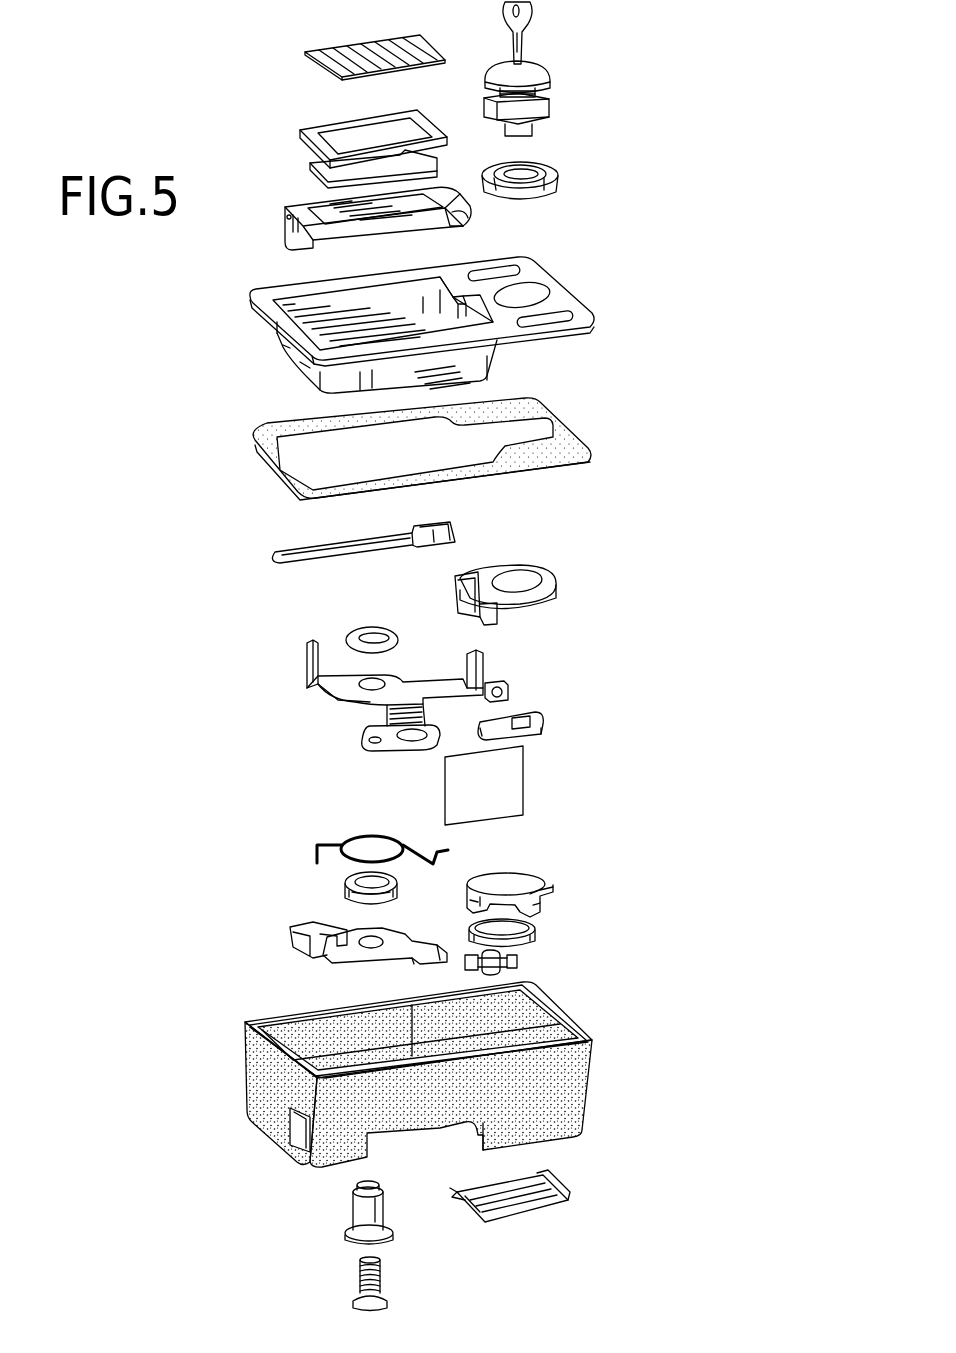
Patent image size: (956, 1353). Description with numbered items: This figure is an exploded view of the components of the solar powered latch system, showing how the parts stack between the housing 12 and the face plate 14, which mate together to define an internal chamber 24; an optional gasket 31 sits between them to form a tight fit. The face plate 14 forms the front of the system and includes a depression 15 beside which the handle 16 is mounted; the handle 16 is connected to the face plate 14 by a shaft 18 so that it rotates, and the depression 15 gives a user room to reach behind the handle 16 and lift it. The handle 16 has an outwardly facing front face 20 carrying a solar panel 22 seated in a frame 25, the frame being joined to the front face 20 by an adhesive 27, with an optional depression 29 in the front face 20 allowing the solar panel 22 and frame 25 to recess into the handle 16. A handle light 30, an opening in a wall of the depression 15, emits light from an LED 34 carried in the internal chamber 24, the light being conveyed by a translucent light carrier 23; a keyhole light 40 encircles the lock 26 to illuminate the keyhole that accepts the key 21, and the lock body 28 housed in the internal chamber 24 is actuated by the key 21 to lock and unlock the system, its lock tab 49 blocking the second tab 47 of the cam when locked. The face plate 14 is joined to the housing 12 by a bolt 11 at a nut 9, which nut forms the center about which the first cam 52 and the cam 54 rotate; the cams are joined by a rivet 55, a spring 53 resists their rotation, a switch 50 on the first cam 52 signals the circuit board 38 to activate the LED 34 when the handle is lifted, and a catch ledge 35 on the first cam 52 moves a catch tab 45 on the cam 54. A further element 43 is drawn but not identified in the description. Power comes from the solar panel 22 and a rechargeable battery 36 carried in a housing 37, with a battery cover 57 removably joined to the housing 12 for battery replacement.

The nut 9 is at (350, 1210).
The bolt 11 is at (386, 1292).
The housing 12 is at (439, 1065).
The face plate 14 is at (420, 310).
The depression 15 is at (290, 318).
The handle 16 is at (376, 221).
The shaft 18 is at (306, 550).
The front face 20 is at (458, 204).
The key 21 is at (510, 34).
The solar panel 22 is at (408, 50).
The light carrier 23 is at (478, 578).
The internal chamber 24 is at (296, 997).
The frame 25 is at (328, 125).
The lock 26 is at (560, 68).
The adhesive 27 is at (322, 170).
The lock body 28 is at (540, 108).
The depression 29 is at (394, 212).
The handle light 30 is at (447, 293).
The gasket 31 is at (562, 432).
The LED 34 is at (518, 962).
The catch ledge 35 is at (375, 720).
The battery 36 is at (537, 936).
The housing 37 is at (526, 884).
The circuit board 38 is at (518, 770).
The keyhole light 40 is at (558, 176).
The left tab 43 is at (305, 650).
The catch tab 45 is at (325, 923).
The second tab 47 is at (488, 662).
The lock tab 49 is at (546, 718).
The switch 50 is at (508, 688).
The first cam 52 is at (386, 680).
The spring 53 is at (326, 846).
The cam 54 is at (292, 936).
The rivet 55 is at (366, 628).
The battery cover 57 is at (560, 1182).